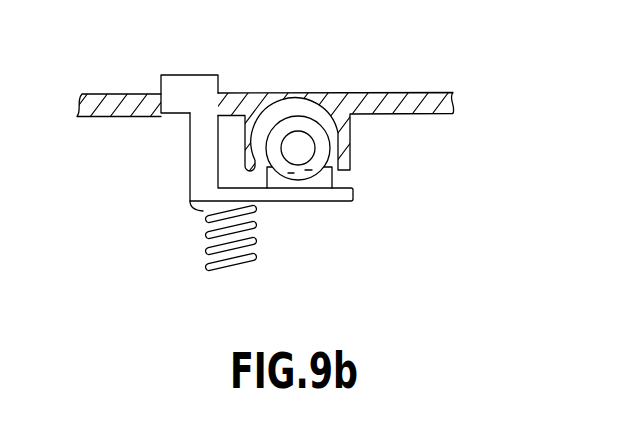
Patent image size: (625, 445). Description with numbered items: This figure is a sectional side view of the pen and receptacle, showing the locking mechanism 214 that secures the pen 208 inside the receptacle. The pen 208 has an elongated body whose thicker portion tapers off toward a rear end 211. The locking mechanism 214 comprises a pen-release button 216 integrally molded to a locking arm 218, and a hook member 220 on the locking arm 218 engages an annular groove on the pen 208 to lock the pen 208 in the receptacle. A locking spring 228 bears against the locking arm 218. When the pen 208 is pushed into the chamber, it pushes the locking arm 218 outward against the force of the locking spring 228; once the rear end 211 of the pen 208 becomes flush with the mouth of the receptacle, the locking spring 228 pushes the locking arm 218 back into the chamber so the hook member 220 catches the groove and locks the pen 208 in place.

The locking mechanism 214 is at (163, 145).
The pen-release button 216 is at (187, 87).
The locking arm 218 is at (312, 201).
The locking spring 228 is at (232, 268).
The hook member 220 is at (340, 182).
The pen 208 is at (300, 128).
The rear end 211 is at (306, 142).